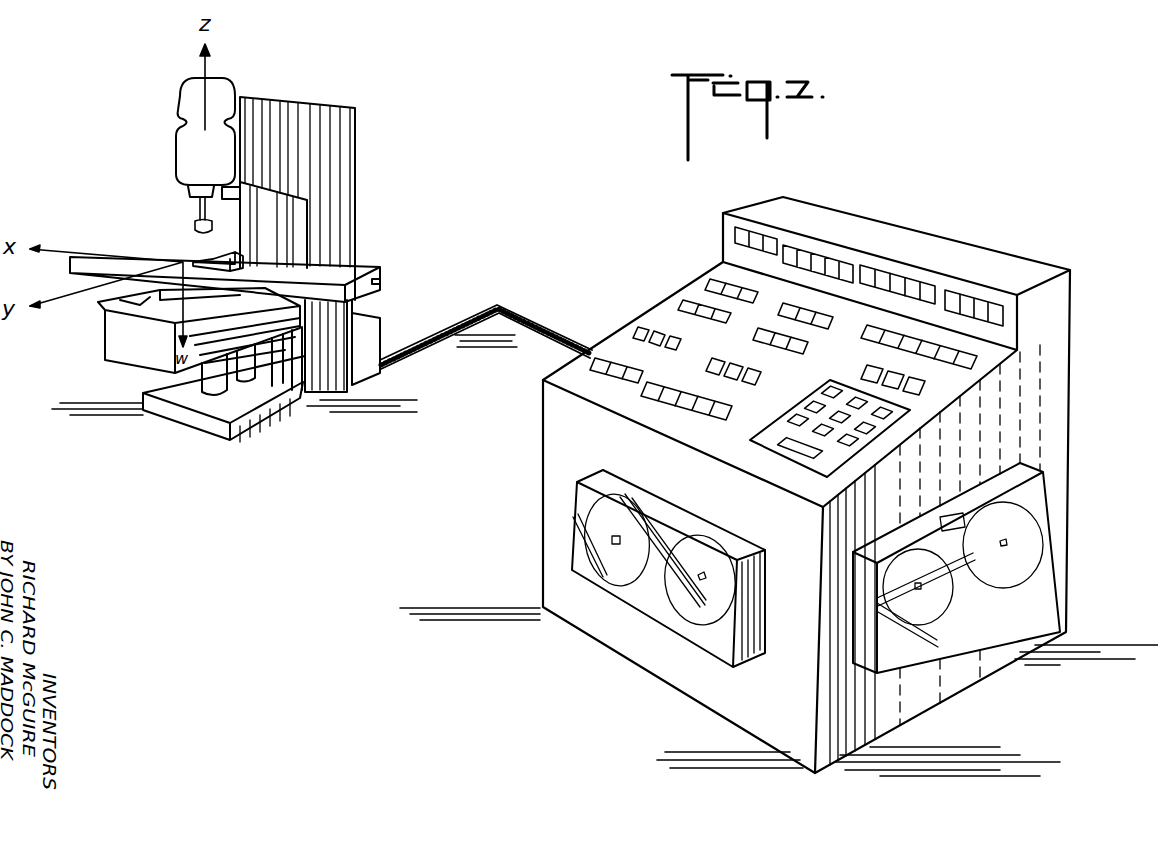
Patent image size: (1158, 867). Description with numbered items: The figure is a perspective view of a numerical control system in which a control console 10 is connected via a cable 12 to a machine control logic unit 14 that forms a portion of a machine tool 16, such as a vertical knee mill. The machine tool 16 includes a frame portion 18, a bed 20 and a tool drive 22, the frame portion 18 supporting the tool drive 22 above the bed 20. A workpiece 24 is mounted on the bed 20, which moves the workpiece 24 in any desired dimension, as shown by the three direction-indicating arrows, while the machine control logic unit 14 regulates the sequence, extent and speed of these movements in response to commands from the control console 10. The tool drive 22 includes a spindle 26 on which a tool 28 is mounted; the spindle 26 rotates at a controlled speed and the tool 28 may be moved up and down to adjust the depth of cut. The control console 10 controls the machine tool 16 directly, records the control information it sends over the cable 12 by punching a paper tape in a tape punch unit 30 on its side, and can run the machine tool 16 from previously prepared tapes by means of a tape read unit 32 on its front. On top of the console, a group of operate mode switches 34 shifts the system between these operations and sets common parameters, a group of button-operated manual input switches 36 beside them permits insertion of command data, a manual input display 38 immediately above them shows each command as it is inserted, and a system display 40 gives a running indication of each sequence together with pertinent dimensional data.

The control console 10 is at (997, 235).
The cable 12 is at (507, 308).
The machine control logic unit 14 is at (370, 338).
The machine tool 16 is at (328, 99).
The frame portion 18 is at (340, 218).
The bed 20 is at (358, 270).
The tool drive 22 is at (178, 137).
The workpiece 24 is at (212, 258).
The spindle 26 is at (198, 199).
The tool 28 is at (194, 223).
The tape punch unit 30 is at (1045, 478).
The tape read unit 32 is at (577, 495).
The operate mode switches 34 is at (640, 397).
The manual input switches 36 is at (943, 423).
The manual input display 38 is at (982, 368).
The system display 40 is at (962, 310).